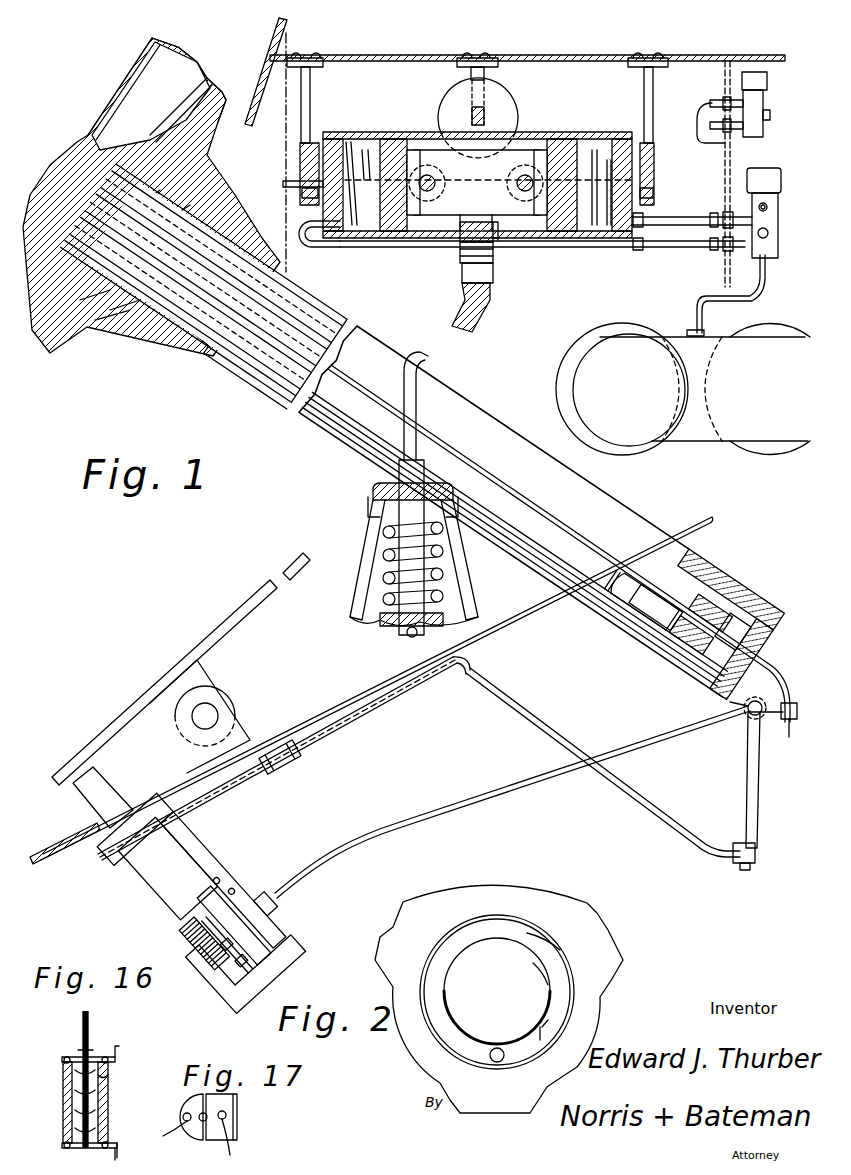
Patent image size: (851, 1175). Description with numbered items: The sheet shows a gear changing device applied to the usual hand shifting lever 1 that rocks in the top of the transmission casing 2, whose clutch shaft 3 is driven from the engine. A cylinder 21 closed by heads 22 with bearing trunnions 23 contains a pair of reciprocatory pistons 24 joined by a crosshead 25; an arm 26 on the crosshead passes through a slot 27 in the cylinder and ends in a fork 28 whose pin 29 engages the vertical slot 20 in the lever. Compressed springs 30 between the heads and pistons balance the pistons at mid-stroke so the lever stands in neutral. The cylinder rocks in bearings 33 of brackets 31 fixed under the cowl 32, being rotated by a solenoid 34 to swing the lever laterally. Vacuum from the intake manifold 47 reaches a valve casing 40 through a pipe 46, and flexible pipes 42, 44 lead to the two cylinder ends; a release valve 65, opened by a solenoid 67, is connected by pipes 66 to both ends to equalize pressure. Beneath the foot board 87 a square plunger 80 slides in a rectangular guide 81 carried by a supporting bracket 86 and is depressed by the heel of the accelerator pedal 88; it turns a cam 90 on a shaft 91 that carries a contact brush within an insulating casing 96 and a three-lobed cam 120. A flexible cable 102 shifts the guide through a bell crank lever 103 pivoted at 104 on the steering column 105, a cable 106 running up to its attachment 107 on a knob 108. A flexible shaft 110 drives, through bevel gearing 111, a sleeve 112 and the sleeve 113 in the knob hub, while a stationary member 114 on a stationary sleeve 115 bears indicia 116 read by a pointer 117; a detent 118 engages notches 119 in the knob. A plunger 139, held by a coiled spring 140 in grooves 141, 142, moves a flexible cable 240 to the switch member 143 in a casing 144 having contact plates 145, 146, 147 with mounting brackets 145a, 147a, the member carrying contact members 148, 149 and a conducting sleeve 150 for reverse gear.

In FIG. 1, the hand shifting lever 1 is at (428, 356).
In FIG. 2, the hand shifting lever 1 is at (499, 999).
In FIG. 1, the transmission casing 2 is at (373, 528).
In FIG. 2, the transmission casing 2 is at (468, 992).
In FIG. 1, the main drive or clutch shaft 3 is at (288, 33).
In FIG. 2, the main drive or clutch shaft 3 is at (491, 1000).
In FIG. 1, the vertical slot 20 is at (488, 285).
In FIG. 1, the cylinder 21 is at (374, 140).
In FIG. 1, the heads 22 is at (336, 140).
In FIG. 1, the bearing trunnions 23 is at (302, 192).
In FIG. 1, the reciprocatory pistons 24 is at (405, 140).
In FIG. 1, the crosshead 25 is at (499, 166).
In FIG. 1, the arm 26 is at (459, 240).
In FIG. 1, the slot 27 is at (498, 240).
In FIG. 1, the fork 28 is at (465, 276).
In FIG. 1, the pin 29 is at (461, 256).
In FIG. 1, the compressed springs 30 is at (360, 140).
In FIG. 1, the brackets 31 is at (310, 90).
In FIG. 1, the cowl 32 is at (552, 57).
In FIG. 1, the bearings 33 is at (300, 168).
In FIG. 1, the solenoid 34 is at (514, 110).
In FIG. 1, the valve casing 40 is at (778, 226).
In FIG. 1, the pipe 42 is at (690, 220).
In FIG. 1, the pipe 44 is at (360, 246).
In FIG. 1, the pipe 46 is at (765, 291).
In FIG. 1, the intake manifold 47 is at (672, 340).
In FIG. 1, the release valve 65 is at (763, 100).
In FIG. 1, the pipes 66 is at (283, 184).
In FIG. 1, the solenoid 67 is at (767, 80).
In FIG. 1, the square plunger 80 is at (102, 790).
In FIG. 1, the rectangular guide 81 is at (157, 878).
In FIG. 1, the supporting bracket 86 is at (235, 880).
In FIG. 1, the foot board 87 is at (327, 708).
In FIG. 1, the accelerator pedal 88 is at (227, 622).
In FIG. 1, the cam 90 is at (262, 974).
In FIG. 1, the shaft 91 is at (255, 935).
In FIG. 1, the insulating casing 96 is at (275, 943).
In FIG. 1, the flexible cable 102 is at (528, 720).
In FIG. 1, the bell crank lever 103 is at (750, 762).
In FIG. 1, the pivot 104 is at (748, 712).
In FIG. 1, the steering column 105 is at (520, 548).
In FIG. 1, the cable 106 is at (770, 657).
In FIG. 1, the attachment point 107 is at (95, 140).
In FIG. 1, the knob 108 is at (82, 148).
In FIG. 2, the knob 108 is at (533, 963).
In FIG. 1, the flexible shaft 110 is at (452, 803).
In FIG. 1, the bevel gearing 111 is at (730, 647).
In FIG. 1, the sleeve 112 is at (695, 586).
In FIG. 1, the sleeve 113 is at (125, 160).
In FIG. 1, the stationary member 114 is at (137, 130).
In FIG. 2, the stationary member 114 is at (527, 933).
In FIG. 1, the stationary sleeve 115 is at (302, 304).
In FIG. 2, the indicia 116 is at (540, 1027).
In FIG. 2, the pointer 117 is at (542, 1027).
In FIG. 1, the yieldable detent 118 is at (159, 196).
In FIG. 1, the grooves or notches 119 is at (176, 210).
In FIG. 1, the cam 120 is at (190, 943).
In FIG. 1, the plunger 139 is at (175, 335).
In FIG. 1, the circular coiled spring 140 is at (125, 332).
In FIG. 1, the circumferential groove 141 is at (92, 328).
In FIG. 1, the circumferential groove 142 is at (108, 345).
In FIG. 16, the movable switch member 143 is at (92, 1045).
In FIG. 17, the movable switch member 143 is at (199, 1116).
In FIG. 1, the switch casing 144 is at (643, 628).
In FIG. 16, the switch casing 144 is at (110, 1115).
In FIG. 16, the upper contact plates 145 is at (80, 1050).
In FIG. 1, the bracket 145a is at (620, 623).
In FIG. 16, the bracket 145a is at (114, 1050).
In FIG. 16, the intermediate contact plates 146 is at (68, 1098).
In FIG. 16, the lower contact plates 147 is at (72, 1149).
In FIG. 1, the bracket 147a is at (682, 653).
In FIG. 16, the bracket 147a is at (118, 1152).
In FIG. 16, the upper contact member 148 is at (64, 1062).
In FIG. 16, the lower contact member 149 is at (64, 1142).
In FIG. 16, the conducting sleeve 150 is at (109, 1070).
In FIG. 1, the flexible cable 240 is at (624, 600).
In FIG. 16, the flexible cable 240 is at (83, 1016).